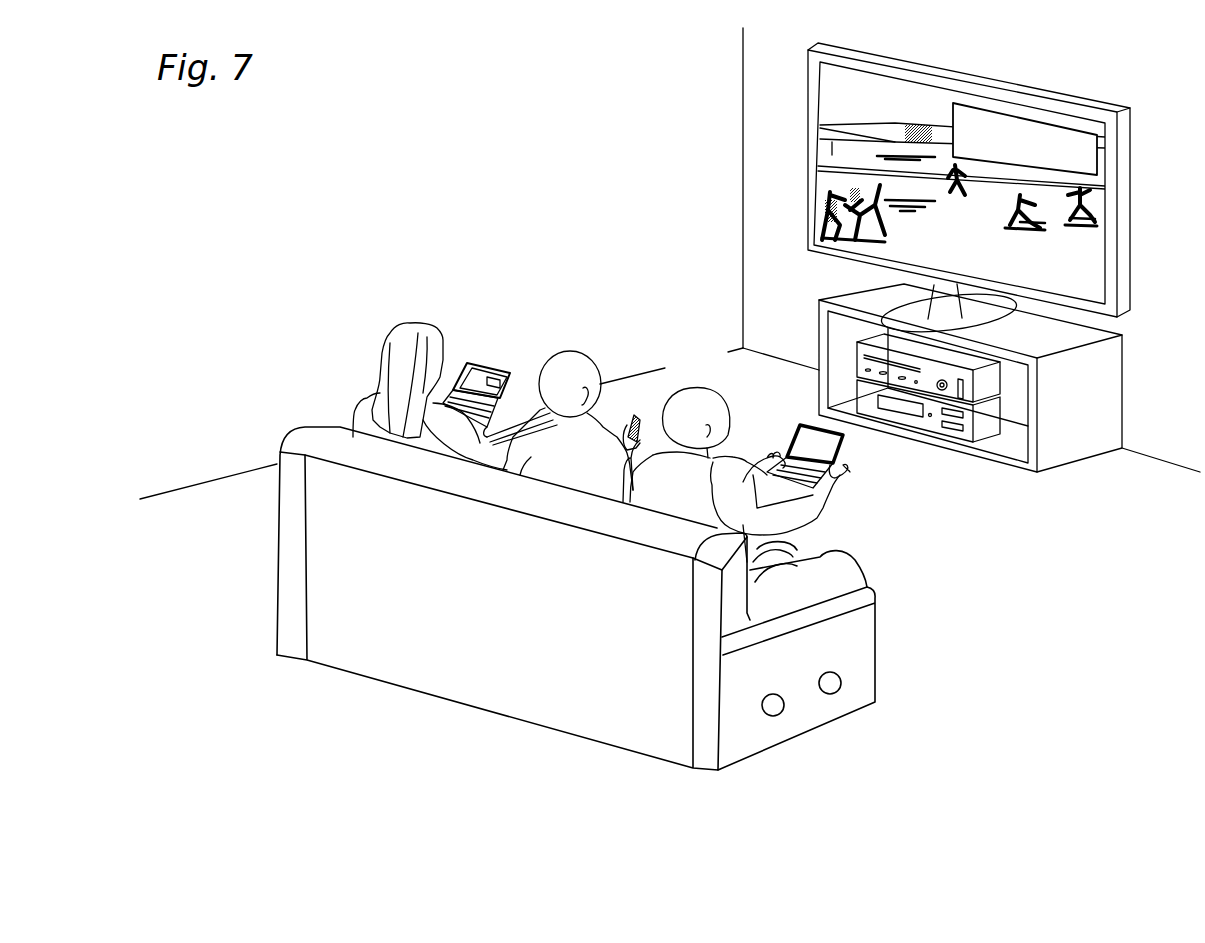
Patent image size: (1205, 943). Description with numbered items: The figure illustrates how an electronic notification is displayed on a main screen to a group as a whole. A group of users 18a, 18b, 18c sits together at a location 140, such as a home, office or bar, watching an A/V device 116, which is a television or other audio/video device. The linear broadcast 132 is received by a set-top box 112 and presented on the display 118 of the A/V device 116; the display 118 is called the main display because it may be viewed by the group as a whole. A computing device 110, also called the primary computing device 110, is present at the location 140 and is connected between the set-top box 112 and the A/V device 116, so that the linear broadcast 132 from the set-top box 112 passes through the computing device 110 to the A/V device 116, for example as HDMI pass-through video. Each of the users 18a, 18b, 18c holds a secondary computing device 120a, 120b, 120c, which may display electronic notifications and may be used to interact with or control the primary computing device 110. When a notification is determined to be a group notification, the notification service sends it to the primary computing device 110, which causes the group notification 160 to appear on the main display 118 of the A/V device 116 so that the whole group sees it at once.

The user 18a is at (367, 393).
The user 18b is at (555, 352).
The user 18c is at (700, 395).
The secondary computing device 120a is at (503, 364).
The secondary computing device 120b is at (642, 400).
The secondary computing device 120c is at (840, 450).
The primary computing device 110 is at (857, 352).
The set-top box 112 is at (870, 398).
The A/V device 116 is at (1133, 157).
The main display 118 is at (1093, 252).
The linear broadcast 132 is at (903, 95).
The group notification 160 is at (1023, 122).
The location 140 is at (1022, 585).